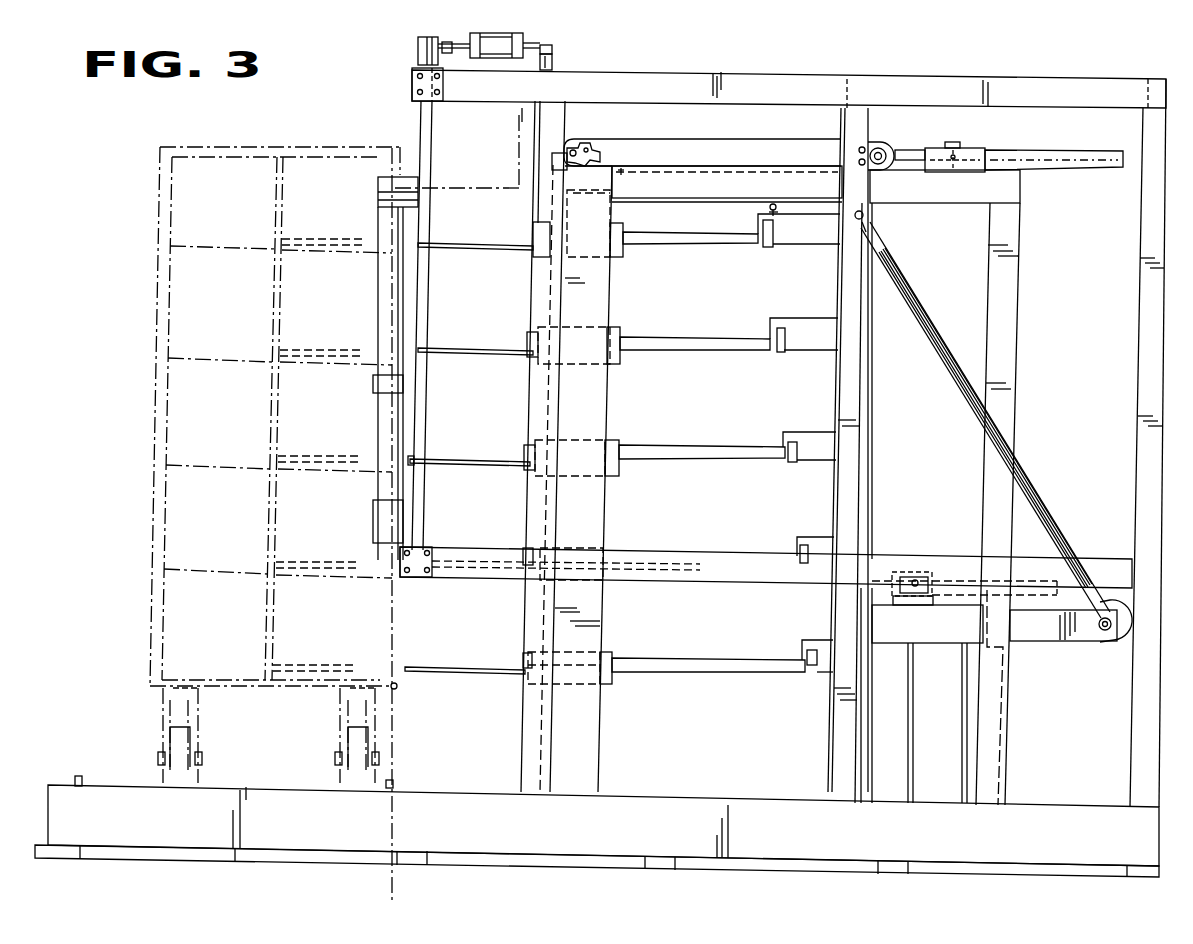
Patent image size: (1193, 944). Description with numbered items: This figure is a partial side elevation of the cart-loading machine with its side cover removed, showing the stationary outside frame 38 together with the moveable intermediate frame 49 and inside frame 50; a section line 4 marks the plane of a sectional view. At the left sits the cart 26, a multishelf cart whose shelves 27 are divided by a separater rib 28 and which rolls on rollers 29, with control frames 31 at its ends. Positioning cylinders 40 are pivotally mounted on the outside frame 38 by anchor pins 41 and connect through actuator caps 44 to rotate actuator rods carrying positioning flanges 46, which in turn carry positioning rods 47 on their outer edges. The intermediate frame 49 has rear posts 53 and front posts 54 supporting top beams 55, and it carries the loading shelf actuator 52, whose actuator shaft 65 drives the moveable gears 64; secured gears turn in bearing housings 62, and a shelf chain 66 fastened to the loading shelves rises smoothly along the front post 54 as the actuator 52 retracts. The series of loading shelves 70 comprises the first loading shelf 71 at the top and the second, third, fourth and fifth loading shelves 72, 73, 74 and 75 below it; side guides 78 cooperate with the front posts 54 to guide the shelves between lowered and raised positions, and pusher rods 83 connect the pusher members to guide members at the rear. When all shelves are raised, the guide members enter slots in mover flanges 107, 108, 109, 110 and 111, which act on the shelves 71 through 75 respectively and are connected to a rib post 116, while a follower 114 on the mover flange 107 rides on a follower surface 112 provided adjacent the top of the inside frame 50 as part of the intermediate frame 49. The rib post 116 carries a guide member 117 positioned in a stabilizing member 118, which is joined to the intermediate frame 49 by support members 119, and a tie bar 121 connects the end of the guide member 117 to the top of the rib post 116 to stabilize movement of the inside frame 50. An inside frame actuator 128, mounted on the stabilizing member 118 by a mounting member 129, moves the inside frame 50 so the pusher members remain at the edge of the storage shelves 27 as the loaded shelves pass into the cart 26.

The section line 4- 4 is at (522, 115).
The cart 26 is at (148, 412).
The shelves 27 is at (258, 247).
The separater rib 28 is at (278, 197).
The rollers 29 is at (360, 792).
The control frames 31 is at (404, 691).
The outside frame 38 is at (1130, 331).
The positioning cylinders 40 is at (506, 50).
The anchor pins 41 is at (552, 52).
The actuator caps 44 is at (418, 52).
The positioning flanges 46 is at (404, 222).
The positioning rods 47 is at (380, 296).
The intermediate frame 49 is at (886, 457).
The inside frame 50 is at (742, 333).
The loading shelf actuator 52 is at (1063, 158).
The rear posts 53 is at (1007, 390).
The front posts 54 is at (597, 313).
The top beams 55 is at (1007, 192).
The bearing housings 62 is at (601, 154).
The moveable gears 64 is at (887, 146).
The actuator shaft 65 is at (918, 150).
The shelf chain 66 is at (728, 140).
The series of loading shelves 70 is at (503, 398).
The first loading shelf 71 is at (470, 246).
The second loading shelf 72 is at (466, 352).
The third loading shelf 73 is at (462, 461).
The fourth loading shelf 74 is at (462, 568).
The fifth loading shelf 75 is at (462, 668).
The side guides 78 is at (624, 248).
The pusher rods 83 is at (690, 241).
The mover flange 107 is at (803, 222).
The mover flange 108 is at (803, 330).
The mover flange 109 is at (810, 433).
The mover flange 110 is at (810, 537).
The mover flange 111 is at (810, 640).
The follower surface 112 is at (749, 199).
The follower 114 is at (793, 196).
The rib post 116 is at (867, 516).
The guide member 117 is at (1048, 633).
The stabilizing member 118 is at (987, 647).
The support members 119 is at (898, 777).
The tie bar 121 is at (910, 297).
The inside frame actuator 128 is at (960, 580).
The mounting member 129 is at (912, 574).